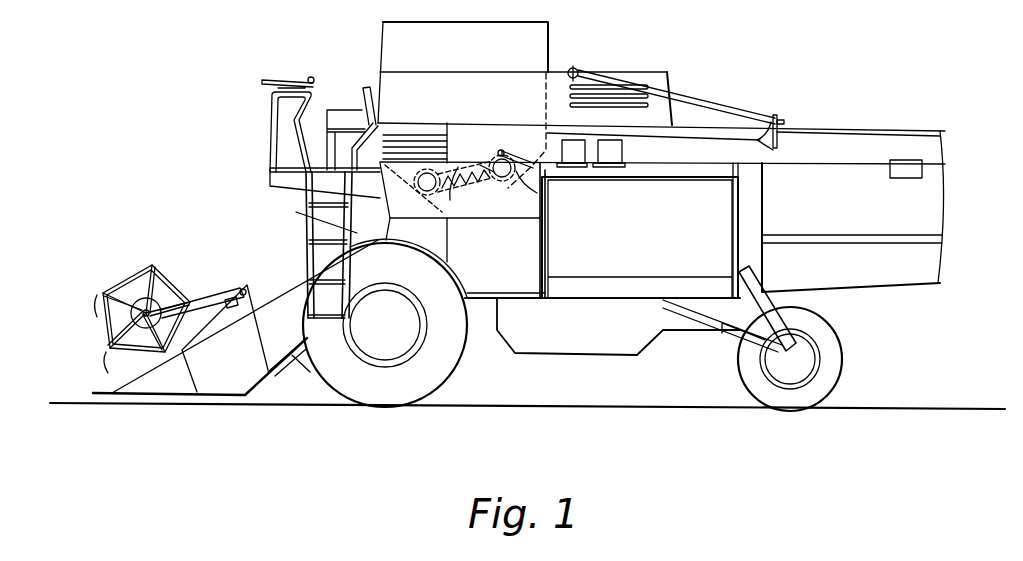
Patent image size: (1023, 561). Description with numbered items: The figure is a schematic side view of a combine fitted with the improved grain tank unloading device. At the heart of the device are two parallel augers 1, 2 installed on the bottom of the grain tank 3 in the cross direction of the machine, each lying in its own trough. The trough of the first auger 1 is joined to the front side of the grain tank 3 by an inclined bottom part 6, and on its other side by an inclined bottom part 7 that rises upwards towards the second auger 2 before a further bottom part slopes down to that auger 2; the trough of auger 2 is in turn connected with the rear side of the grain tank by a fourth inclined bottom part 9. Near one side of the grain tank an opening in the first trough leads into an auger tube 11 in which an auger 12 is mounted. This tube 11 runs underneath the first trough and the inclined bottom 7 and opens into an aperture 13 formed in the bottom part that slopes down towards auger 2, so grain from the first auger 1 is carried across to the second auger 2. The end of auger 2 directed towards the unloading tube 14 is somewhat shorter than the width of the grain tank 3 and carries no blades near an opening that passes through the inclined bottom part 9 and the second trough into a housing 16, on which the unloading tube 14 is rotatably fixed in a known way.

The auger 1 is at (420, 187).
The auger 2 is at (540, 133).
The grain tank 3 is at (527, 80).
The inclined bottom part 6 is at (388, 208).
The inclined bottom part 7 is at (455, 167).
The fourth inclined bottom part 9 is at (505, 186).
The auger tube 11 is at (468, 192).
The auger 12 is at (487, 167).
The aperture 13 is at (450, 200).
The unloading tube 14 is at (850, 143).
The housing 16 is at (537, 193).